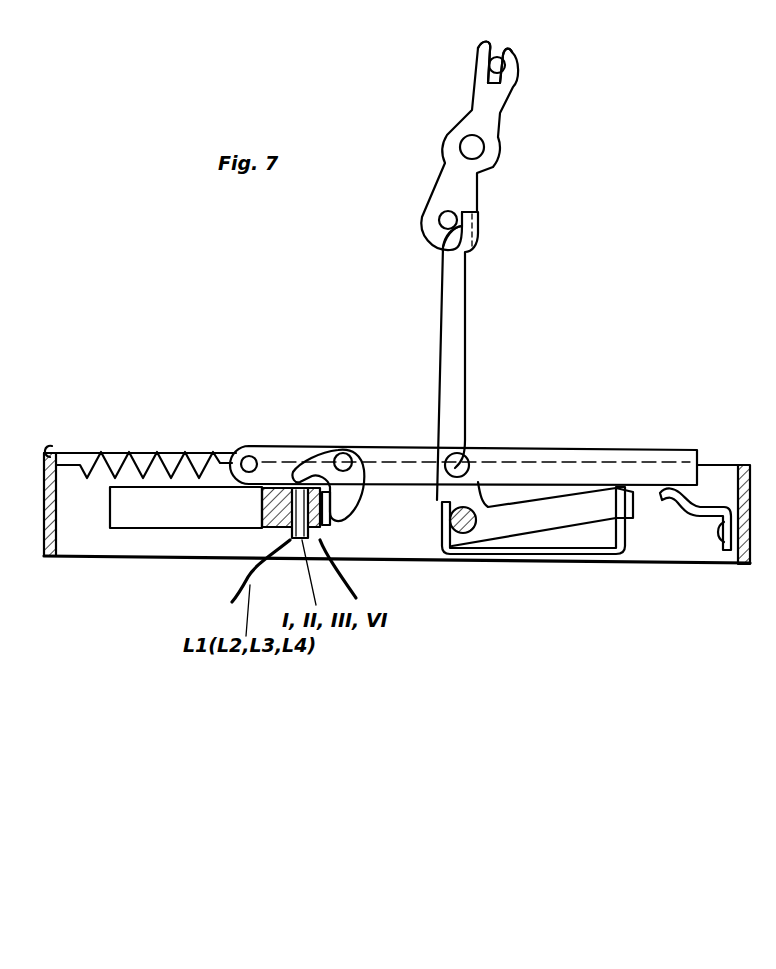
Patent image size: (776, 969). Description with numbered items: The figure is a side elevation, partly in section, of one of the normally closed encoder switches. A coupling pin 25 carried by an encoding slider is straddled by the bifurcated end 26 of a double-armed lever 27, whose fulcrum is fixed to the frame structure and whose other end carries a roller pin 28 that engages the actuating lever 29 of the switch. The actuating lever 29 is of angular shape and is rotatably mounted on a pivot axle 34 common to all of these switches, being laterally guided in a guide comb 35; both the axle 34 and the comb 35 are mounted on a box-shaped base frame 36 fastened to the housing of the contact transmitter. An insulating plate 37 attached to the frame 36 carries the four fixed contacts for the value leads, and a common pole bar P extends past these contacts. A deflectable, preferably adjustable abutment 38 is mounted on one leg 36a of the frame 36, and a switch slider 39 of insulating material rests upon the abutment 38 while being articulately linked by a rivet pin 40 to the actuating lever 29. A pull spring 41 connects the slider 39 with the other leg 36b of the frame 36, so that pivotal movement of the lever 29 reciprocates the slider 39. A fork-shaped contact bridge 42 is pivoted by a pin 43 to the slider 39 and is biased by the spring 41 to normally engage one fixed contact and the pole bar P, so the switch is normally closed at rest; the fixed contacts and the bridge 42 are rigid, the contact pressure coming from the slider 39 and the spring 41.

The coupling pin 25 is at (488, 66).
The fork slot 26 is at (500, 50).
The double-armed lever 27 is at (495, 100).
The roller pin 28 is at (446, 222).
The actuating lever 29 is at (455, 320).
The pivot axle 34 is at (469, 528).
The guide comb 35 is at (575, 548).
The box-shaped base frame 36 is at (655, 537).
The leg of the frame 36a is at (740, 562).
The other leg of the frame 36b is at (58, 534).
The insulating plate 37 is at (190, 515).
The abutment 38 is at (703, 498).
The switch slider 39 is at (555, 450).
The rivet pin 40 is at (462, 460).
The pull spring 41 is at (170, 455).
The contact bridge 42 is at (352, 493).
The pin 43 is at (343, 455).
The pole bar P is at (330, 520).